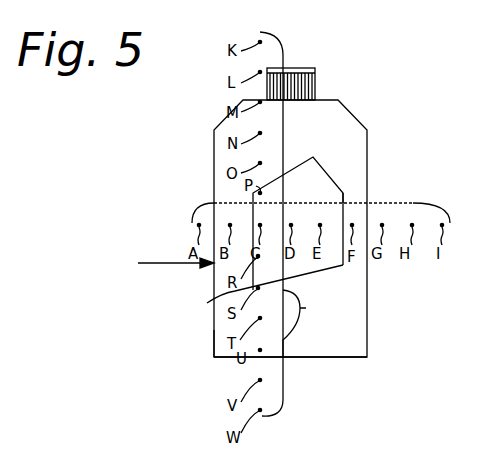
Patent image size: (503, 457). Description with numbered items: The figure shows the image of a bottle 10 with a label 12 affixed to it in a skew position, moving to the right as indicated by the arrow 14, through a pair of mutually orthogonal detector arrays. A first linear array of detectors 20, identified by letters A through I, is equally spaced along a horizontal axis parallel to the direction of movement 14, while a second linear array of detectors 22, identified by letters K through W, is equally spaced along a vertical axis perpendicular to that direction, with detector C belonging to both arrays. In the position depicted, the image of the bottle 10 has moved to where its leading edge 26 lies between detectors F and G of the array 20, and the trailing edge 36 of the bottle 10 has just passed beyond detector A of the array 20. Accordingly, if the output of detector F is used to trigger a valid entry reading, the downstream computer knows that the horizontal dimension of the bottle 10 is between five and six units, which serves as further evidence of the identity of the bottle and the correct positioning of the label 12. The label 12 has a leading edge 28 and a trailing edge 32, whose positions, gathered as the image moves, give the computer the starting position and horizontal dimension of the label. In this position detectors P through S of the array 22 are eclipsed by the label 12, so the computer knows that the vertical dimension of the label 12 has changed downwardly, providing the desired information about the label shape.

The bottle 10 is at (213, 173).
The label 12 is at (298, 163).
The arrow 14 is at (163, 267).
The first linear array of detectors 20 is at (413, 202).
The second linear array of detectors 22 is at (310, 323).
The leading edge 26 is at (369, 345).
The leading edge 28 is at (343, 193).
The trailing edge 32 is at (262, 298).
The trailing edge 36 is at (212, 358).